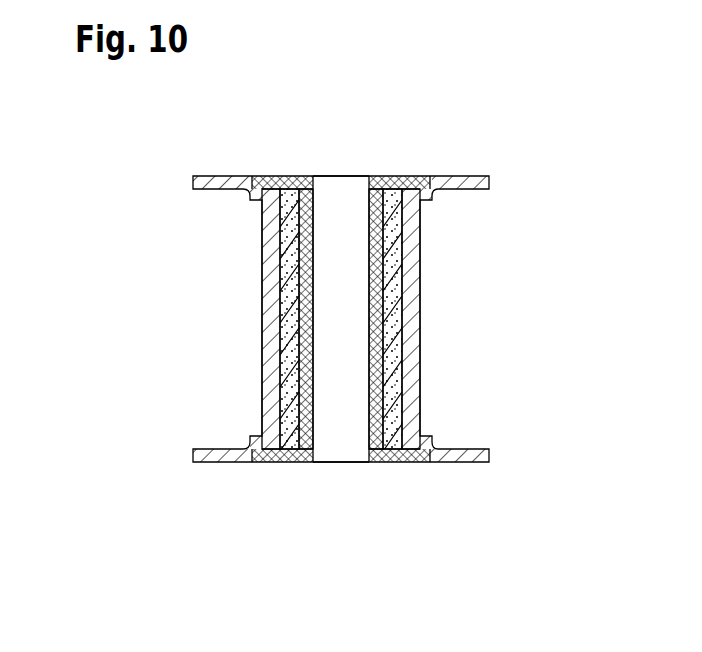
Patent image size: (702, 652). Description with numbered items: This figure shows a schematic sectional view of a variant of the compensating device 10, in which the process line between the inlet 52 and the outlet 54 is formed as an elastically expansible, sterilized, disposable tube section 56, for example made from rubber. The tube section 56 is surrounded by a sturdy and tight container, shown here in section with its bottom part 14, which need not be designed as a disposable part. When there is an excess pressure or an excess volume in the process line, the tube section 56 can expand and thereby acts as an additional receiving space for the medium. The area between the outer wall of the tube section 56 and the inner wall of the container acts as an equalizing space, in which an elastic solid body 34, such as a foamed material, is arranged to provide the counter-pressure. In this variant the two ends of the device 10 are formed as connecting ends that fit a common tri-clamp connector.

The device 10 is at (467, 142).
The bottom part 14 is at (270, 322).
The elastic solid body 34 is at (294, 176).
The outlet 54 is at (339, 176).
The tube section 56 is at (298, 462).
The inlet 52 is at (346, 462).